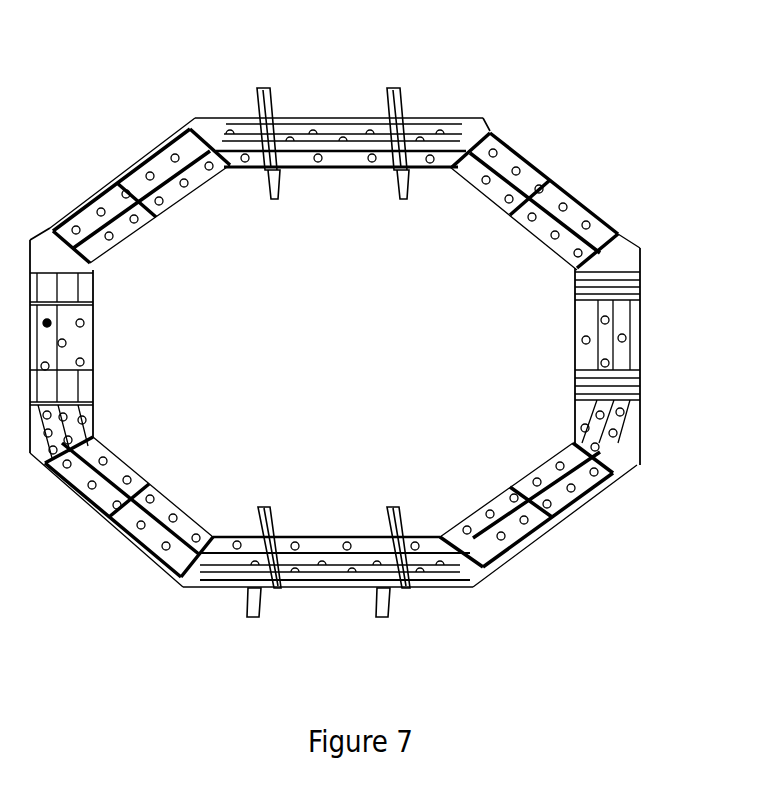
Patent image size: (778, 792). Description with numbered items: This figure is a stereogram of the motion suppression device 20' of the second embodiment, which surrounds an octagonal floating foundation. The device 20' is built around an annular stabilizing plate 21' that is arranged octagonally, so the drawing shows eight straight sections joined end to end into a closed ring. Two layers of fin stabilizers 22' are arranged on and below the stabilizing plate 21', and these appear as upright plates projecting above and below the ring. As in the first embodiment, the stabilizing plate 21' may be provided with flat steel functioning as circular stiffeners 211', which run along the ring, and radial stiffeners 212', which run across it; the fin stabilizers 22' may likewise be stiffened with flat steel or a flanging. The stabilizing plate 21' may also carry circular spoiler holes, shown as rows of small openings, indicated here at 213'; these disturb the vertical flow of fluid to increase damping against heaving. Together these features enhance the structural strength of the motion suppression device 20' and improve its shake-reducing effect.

The motion suppression device 20' is at (375, 323).
The radial stiffeners 212' is at (335, 98).
The fin stabilizer 22' is at (365, 338).
The circular stiffeners 211' is at (555, 175).
The stabilizing plate 21' is at (565, 193).
The side straight section 213' is at (648, 356).